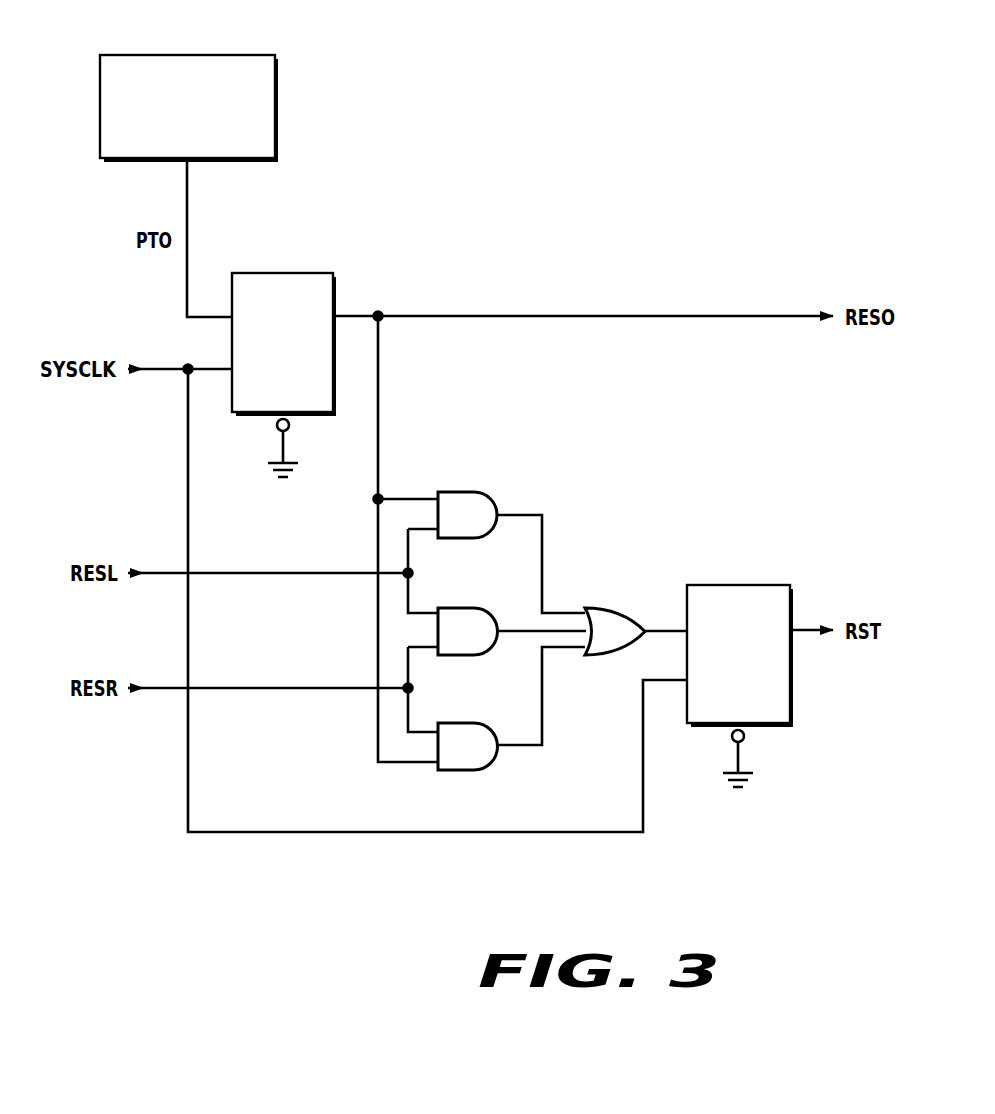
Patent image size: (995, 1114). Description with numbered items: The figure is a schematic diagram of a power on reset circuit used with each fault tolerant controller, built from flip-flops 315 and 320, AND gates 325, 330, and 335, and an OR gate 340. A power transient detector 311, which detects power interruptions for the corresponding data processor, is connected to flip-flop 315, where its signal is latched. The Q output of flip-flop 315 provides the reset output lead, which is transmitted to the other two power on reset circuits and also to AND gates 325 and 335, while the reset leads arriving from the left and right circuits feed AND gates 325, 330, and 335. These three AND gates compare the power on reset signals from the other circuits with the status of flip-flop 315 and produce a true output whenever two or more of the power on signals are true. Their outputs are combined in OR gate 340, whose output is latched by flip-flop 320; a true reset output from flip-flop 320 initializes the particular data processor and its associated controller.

The power transient detector 311 is at (153, 52).
The flip-flop 315 is at (310, 272).
The flip-flop 320 is at (793, 685).
The AND gate 325 is at (467, 492).
The AND gate 330 is at (470, 608).
The AND gate 335 is at (470, 723).
The OR gate 340 is at (608, 608).